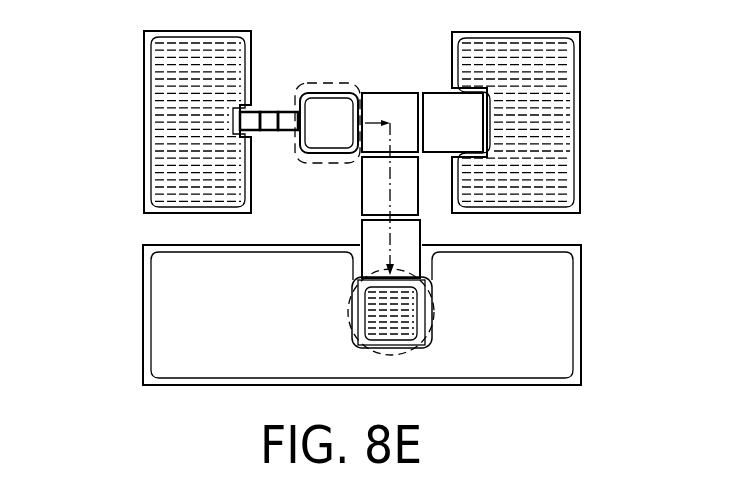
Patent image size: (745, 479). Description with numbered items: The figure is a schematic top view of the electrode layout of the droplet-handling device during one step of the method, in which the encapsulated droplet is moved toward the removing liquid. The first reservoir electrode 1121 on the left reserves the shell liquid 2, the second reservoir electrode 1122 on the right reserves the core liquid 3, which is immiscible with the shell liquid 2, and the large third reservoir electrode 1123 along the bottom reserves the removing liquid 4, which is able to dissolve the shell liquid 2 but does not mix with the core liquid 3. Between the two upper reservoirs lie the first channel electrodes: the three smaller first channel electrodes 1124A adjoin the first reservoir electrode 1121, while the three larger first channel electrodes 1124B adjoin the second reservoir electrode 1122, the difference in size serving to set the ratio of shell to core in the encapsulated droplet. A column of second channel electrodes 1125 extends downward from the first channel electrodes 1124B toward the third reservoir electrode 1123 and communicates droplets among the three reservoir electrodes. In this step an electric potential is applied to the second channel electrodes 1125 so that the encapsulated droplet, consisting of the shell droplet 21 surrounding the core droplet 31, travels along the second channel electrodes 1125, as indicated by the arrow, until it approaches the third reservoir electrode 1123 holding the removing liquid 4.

The shell liquid 2 is at (136, 118).
The core liquid 3 is at (588, 118).
The removing liquid 4 is at (135, 314).
The first reservoir electrode 1121 is at (144, 70).
The second reservoir electrode 1122 is at (580, 68).
The third reservoir electrode 1123 is at (581, 295).
The first channel electrodes 1124A is at (297, 114).
The first channel electrodes 1124B is at (448, 107).
The second channel electrodes 1125 is at (362, 300).
The shell droplet 21 is at (398, 276).
The core droplet 31 is at (402, 328).